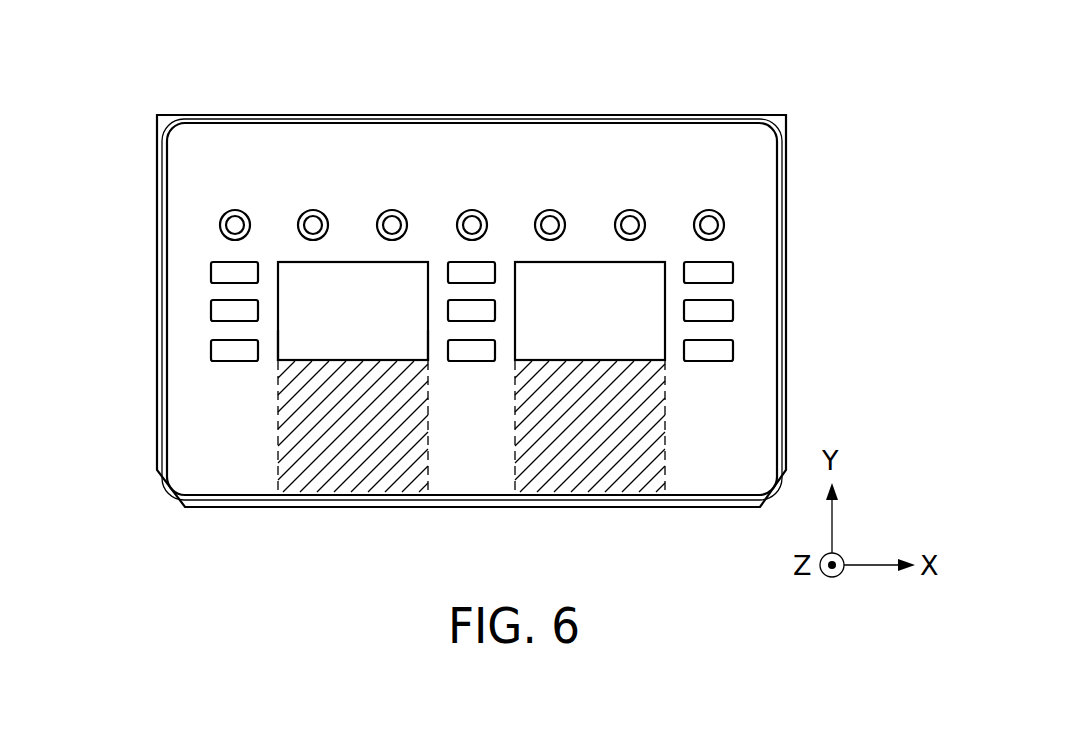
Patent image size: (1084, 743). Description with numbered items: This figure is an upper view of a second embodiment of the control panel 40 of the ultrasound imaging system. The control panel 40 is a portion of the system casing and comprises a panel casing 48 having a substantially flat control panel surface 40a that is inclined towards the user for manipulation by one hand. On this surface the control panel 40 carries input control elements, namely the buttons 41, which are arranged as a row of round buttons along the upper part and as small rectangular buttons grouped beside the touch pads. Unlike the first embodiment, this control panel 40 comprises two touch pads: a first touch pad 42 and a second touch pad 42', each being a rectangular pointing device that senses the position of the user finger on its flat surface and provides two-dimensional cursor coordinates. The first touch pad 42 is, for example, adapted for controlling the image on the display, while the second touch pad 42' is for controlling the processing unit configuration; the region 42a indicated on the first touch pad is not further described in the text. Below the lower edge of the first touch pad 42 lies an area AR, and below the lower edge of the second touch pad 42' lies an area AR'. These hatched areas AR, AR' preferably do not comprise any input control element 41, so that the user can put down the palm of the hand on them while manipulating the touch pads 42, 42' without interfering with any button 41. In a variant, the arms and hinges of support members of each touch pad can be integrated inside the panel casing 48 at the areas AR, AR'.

The control panel 40 is at (843, 155).
The control panel surface 40a is at (743, 437).
The buttons 41 is at (243, 272).
The first touch pad 42 is at (245, 204).
The second touch pad 42' is at (590, 247).
The lower portion of display area 42a is at (318, 339).
The panel casing 48 is at (786, 282).
The area AR is at (353, 471).
The area AR' is at (590, 471).